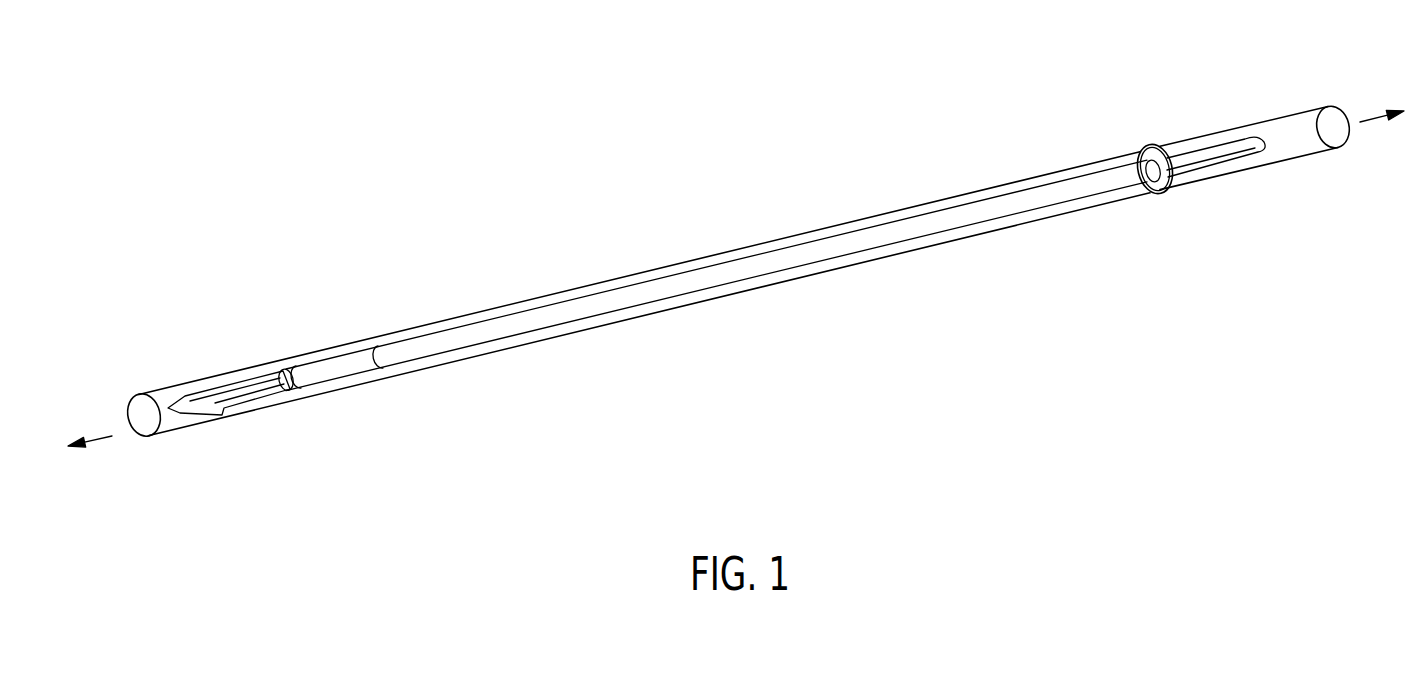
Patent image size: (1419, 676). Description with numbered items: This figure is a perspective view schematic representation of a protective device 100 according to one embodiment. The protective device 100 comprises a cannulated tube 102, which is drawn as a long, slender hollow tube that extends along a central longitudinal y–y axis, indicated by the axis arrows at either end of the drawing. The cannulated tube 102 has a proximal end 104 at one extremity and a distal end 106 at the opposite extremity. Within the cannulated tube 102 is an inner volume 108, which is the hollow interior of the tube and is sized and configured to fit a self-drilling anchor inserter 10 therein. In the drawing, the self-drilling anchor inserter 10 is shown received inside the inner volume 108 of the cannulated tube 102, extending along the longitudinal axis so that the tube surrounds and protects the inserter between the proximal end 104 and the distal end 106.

The protective device 100 is at (741, 288).
The self-drilling anchor inserter 10 is at (507, 340).
The cannulated tube 102 is at (240, 420).
The proximal end 104 is at (1338, 176).
The distal end 106 is at (130, 439).
The inner volume 108 is at (134, 399).